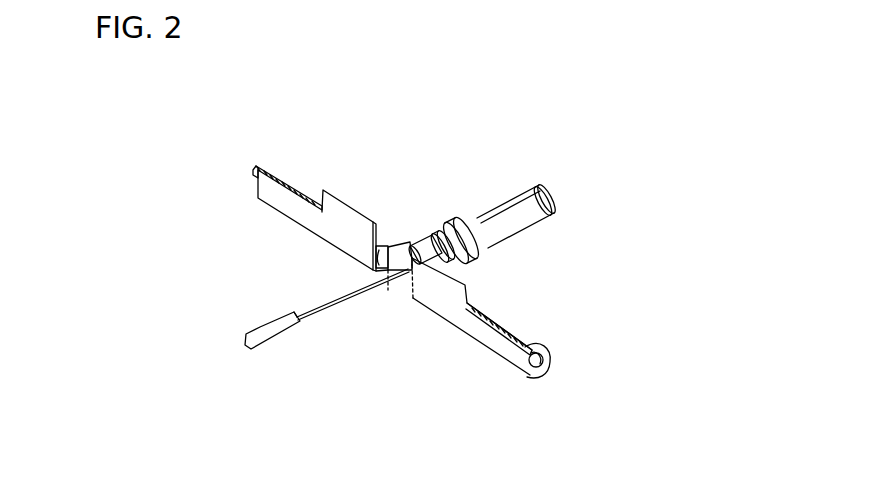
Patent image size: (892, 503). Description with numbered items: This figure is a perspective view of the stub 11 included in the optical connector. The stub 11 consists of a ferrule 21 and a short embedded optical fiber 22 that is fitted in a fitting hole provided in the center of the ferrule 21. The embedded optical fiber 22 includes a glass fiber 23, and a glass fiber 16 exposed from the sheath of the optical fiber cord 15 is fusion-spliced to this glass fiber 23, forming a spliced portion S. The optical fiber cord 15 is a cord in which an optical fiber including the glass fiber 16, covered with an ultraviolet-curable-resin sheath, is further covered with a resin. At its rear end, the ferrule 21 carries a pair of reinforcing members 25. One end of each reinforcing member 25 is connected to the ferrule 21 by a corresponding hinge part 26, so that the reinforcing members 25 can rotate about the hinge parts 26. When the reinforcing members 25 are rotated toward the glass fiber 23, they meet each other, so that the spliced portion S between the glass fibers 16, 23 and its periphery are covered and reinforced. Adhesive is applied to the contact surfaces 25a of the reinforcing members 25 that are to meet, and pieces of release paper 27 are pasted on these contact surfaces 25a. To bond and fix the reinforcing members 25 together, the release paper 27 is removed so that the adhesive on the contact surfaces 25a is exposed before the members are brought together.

The stub 11 is at (397, 178).
The optical fiber cord 15 is at (262, 327).
The glass fiber 16 is at (307, 312).
The ferrule 21 is at (510, 197).
The embedded optical fiber 22 is at (402, 280).
The glass fiber 23 is at (375, 283).
The reinforcing member 25 is at (288, 180).
The contact surface 25a is at (250, 170).
The hinge part 26 is at (398, 247).
The release paper 27 is at (352, 184).
The spliced portion S is at (358, 283).